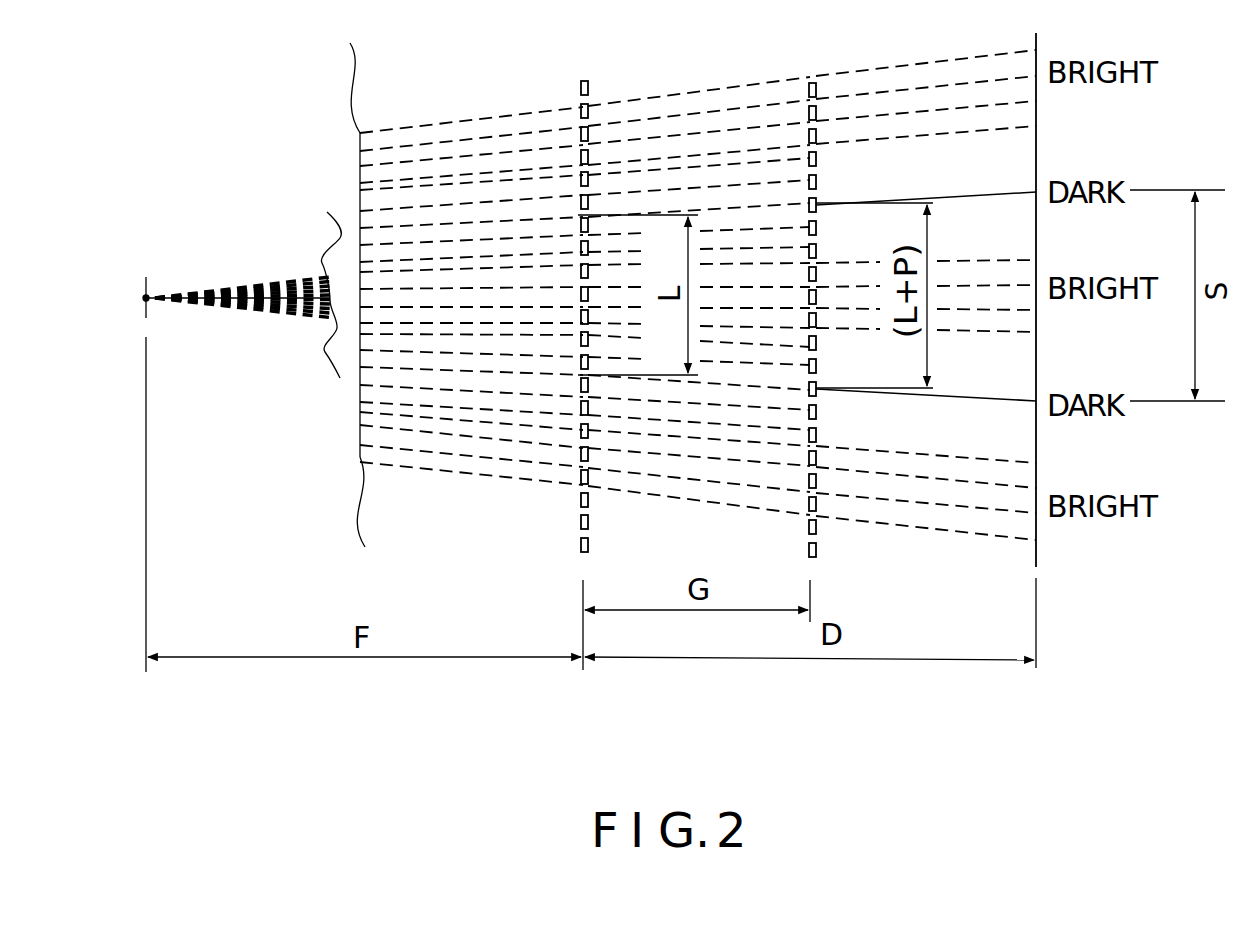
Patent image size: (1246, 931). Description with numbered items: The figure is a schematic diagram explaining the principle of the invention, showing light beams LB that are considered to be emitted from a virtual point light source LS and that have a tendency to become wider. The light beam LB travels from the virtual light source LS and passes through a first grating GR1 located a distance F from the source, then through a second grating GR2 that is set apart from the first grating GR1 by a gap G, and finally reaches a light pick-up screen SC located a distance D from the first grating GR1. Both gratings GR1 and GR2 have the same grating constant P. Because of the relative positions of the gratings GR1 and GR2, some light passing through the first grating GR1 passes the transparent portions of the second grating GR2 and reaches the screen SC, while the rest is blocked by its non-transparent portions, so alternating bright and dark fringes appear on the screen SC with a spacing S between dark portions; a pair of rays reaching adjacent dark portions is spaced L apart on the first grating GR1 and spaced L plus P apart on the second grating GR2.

The light beam LB is at (468, 110).
The virtual point light source LS is at (150, 302).
The first grating GR1 is at (576, 520).
The second grating GR2 is at (822, 547).
The light pick-up screen SC is at (1033, 549).